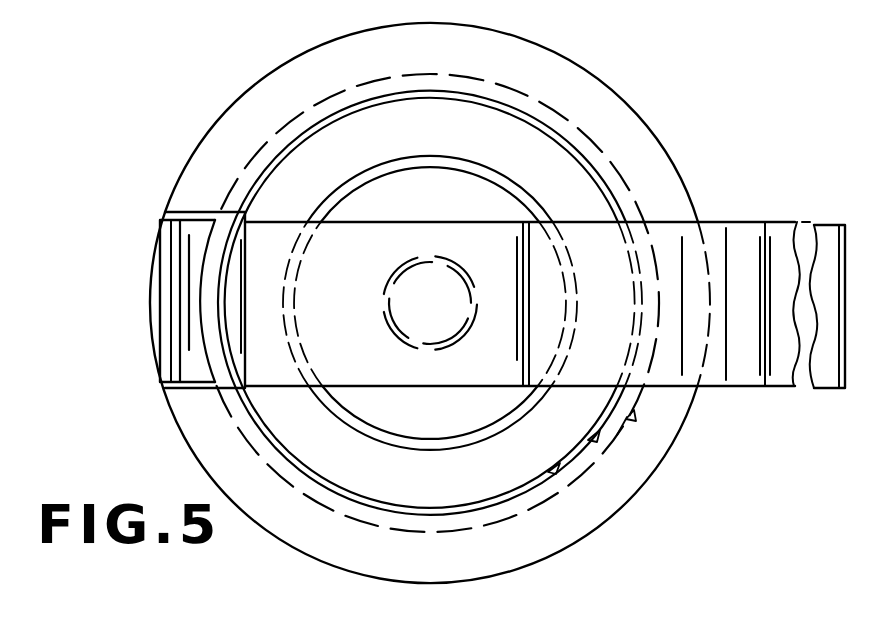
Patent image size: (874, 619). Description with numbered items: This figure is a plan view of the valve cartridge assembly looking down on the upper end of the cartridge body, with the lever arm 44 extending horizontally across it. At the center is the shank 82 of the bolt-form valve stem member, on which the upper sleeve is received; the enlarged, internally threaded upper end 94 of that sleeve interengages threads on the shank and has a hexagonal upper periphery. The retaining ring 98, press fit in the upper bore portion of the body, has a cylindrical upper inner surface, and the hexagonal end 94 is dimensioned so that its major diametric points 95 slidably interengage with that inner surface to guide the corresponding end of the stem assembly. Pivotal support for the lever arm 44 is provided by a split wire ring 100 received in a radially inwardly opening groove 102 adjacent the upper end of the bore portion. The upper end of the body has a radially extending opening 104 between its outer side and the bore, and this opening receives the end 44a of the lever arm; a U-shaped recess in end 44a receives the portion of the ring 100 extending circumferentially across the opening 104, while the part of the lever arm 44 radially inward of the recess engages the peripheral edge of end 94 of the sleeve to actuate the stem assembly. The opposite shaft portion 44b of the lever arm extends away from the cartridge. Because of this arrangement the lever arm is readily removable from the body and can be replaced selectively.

The lever arm 44 is at (665, 247).
The end of lever arm 44a is at (167, 340).
The shaft end portion 44b is at (827, 233).
The shank 82 is at (393, 325).
The upper end of upper sleeve 94 is at (477, 208).
The major diametric points 95 is at (348, 177).
The retaining ring 98 is at (367, 125).
The split wire ring 100 is at (562, 470).
The groove 102 is at (632, 420).
The opening 104 is at (155, 295).